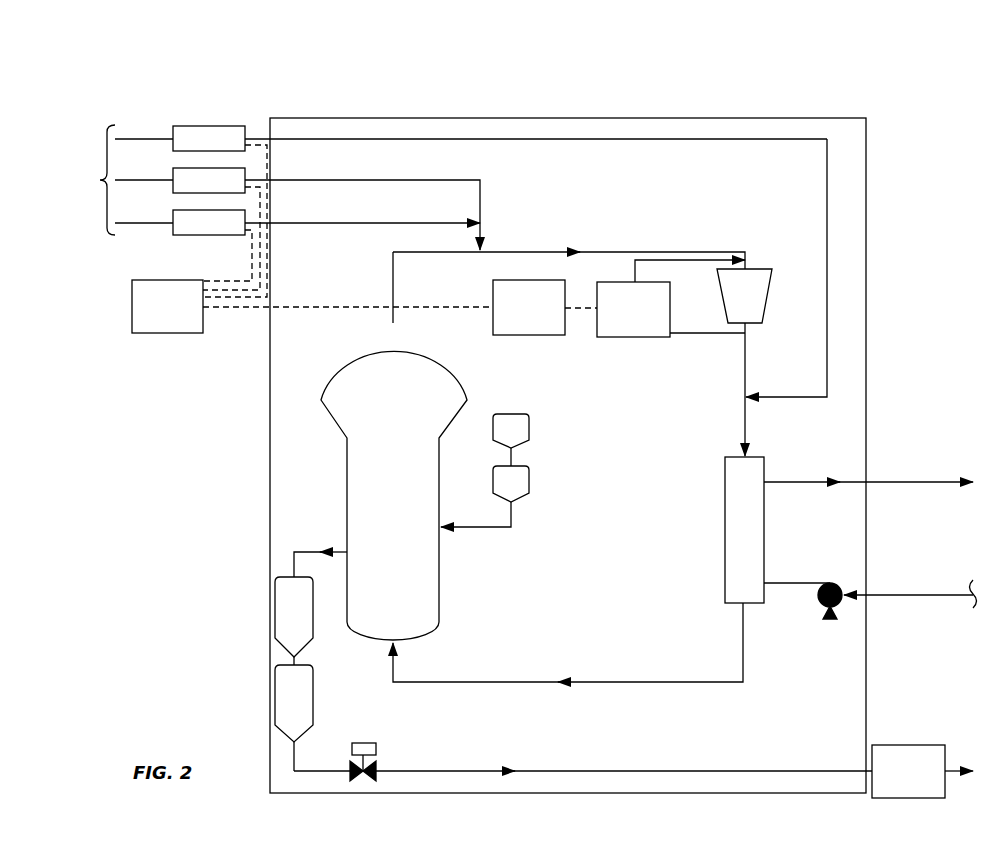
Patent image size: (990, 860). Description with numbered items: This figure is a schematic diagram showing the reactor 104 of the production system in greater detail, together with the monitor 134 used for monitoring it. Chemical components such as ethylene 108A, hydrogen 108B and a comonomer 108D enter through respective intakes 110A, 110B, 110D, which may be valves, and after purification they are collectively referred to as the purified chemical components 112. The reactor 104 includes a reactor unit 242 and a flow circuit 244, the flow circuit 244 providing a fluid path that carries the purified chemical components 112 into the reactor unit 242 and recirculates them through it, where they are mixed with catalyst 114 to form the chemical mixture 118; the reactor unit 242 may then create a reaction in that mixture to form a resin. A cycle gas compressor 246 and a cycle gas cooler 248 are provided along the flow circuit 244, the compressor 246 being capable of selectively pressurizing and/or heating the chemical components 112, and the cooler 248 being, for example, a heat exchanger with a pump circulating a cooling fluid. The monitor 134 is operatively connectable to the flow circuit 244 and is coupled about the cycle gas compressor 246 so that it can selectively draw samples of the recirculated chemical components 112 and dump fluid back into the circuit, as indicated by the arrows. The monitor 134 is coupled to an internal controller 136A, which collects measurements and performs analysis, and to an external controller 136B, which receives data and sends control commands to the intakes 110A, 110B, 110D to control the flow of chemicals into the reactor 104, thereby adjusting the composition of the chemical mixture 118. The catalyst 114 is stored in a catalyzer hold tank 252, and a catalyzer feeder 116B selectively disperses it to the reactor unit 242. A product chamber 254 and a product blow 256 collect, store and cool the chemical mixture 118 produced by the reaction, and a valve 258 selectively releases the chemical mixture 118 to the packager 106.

The reactor 104 is at (902, 134).
The packager 106 is at (893, 780).
The ethylene 108A is at (132, 180).
The hydrogen 108B is at (140, 224).
The comonomer 108D is at (152, 139).
The intake 110A is at (188, 190).
The intake 110B is at (188, 232).
The intake 110D is at (188, 148).
The purified chemical components 112 is at (89, 180).
The catalyst 114 is at (522, 412).
The catalyzer feeder 116B is at (531, 476).
The chemical mixture 118 is at (700, 336).
The monitor 134 is at (618, 318).
The internal controller 136A is at (508, 316).
The external controller 136B is at (146, 315).
The reactor unit 242 is at (378, 482).
The flow circuit 244 is at (690, 251).
The cycle gas compressor 246 is at (731, 303).
The cycle gas cooler 248 is at (759, 542).
The catalyzer hold tank 252 is at (531, 424).
The product chamber 254 is at (279, 626).
The product blow 256 is at (279, 712).
The valve 258 is at (366, 768).